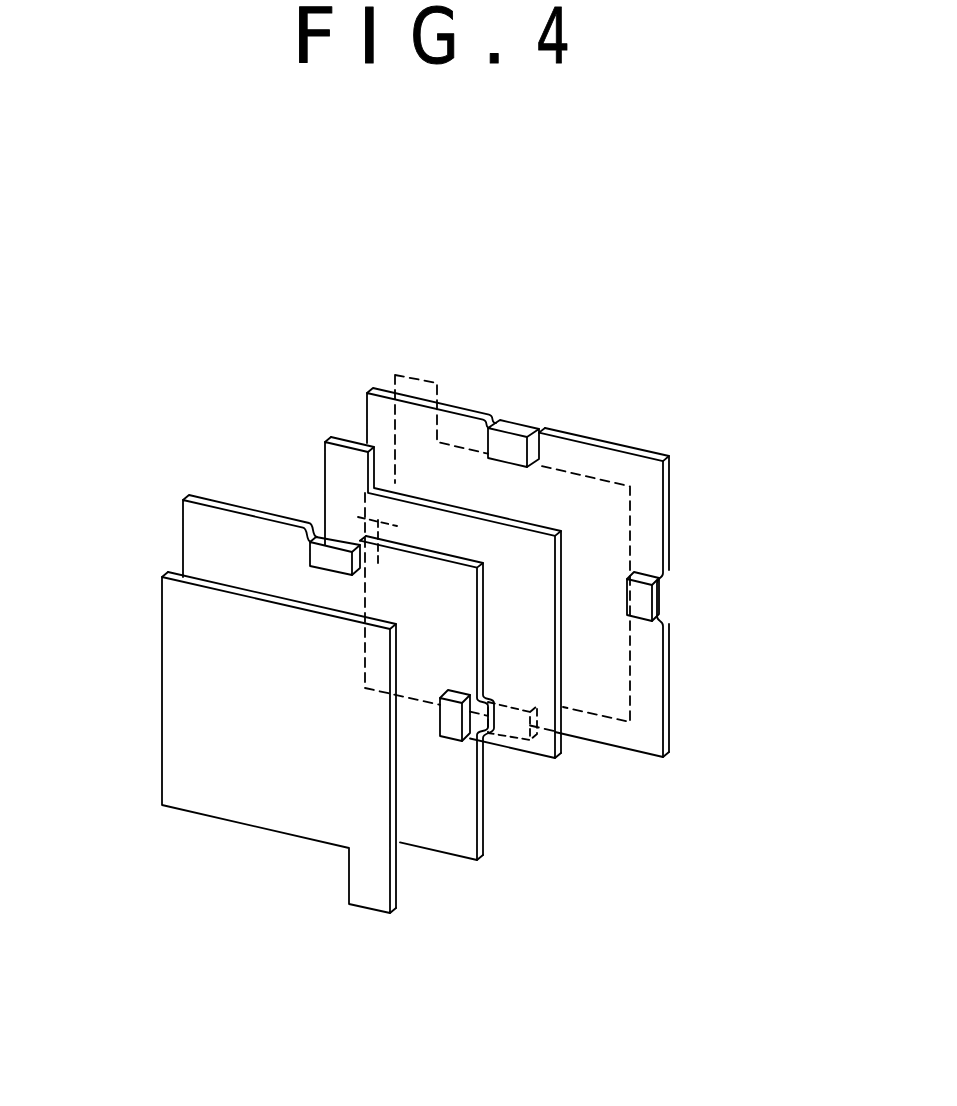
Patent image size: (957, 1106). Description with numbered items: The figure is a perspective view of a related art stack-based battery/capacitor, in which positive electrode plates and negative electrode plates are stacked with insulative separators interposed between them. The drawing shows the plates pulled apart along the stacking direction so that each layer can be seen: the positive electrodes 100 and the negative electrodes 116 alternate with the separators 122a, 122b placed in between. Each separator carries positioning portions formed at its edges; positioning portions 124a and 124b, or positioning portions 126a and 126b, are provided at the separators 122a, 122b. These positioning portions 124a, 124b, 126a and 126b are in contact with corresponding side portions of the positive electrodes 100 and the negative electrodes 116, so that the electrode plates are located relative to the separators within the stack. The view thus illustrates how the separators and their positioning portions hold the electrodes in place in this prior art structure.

The positive electrode 100 is at (582, 754).
The negative electrode 116 is at (287, 847).
The separator 122a is at (678, 463).
The separator 122b is at (207, 490).
The positioning portion 124a is at (642, 597).
The positioning portion 124b is at (455, 740).
The positioning portion 126a is at (508, 436).
The positioning portion 126b is at (335, 553).